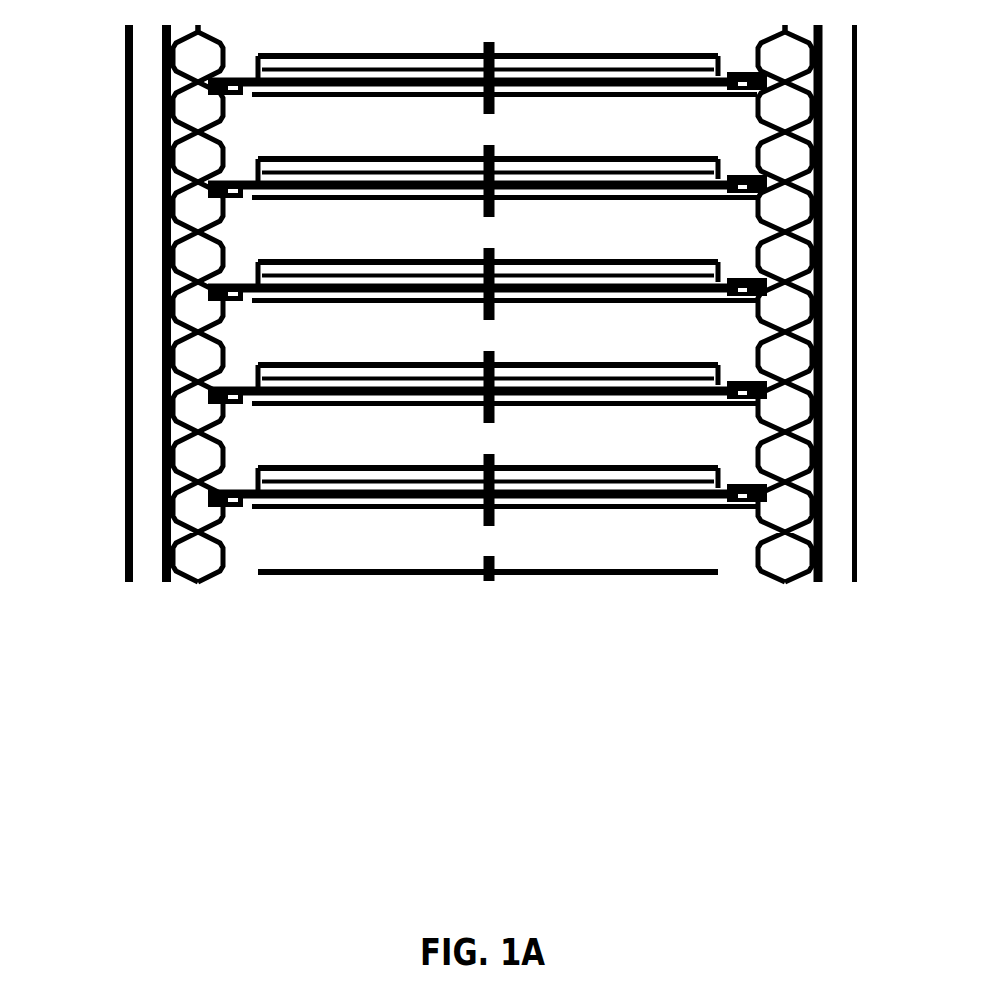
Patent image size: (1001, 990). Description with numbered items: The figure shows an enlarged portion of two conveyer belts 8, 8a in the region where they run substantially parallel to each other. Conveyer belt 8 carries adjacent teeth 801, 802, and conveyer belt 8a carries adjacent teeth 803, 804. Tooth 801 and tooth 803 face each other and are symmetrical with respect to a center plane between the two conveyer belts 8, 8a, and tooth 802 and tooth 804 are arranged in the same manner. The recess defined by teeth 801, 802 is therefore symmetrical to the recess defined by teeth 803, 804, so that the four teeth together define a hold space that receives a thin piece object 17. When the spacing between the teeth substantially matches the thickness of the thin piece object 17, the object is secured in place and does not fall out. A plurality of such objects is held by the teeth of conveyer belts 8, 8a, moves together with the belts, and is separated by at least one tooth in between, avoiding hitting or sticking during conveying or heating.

The conveyer belt 8 is at (174, 488).
The conveyer belt 8a is at (801, 490).
The thin piece object 17 is at (234, 373).
The tooth 801 is at (236, 353).
The tooth 802 is at (236, 423).
The tooth 803 is at (730, 345).
The tooth 804 is at (734, 414).